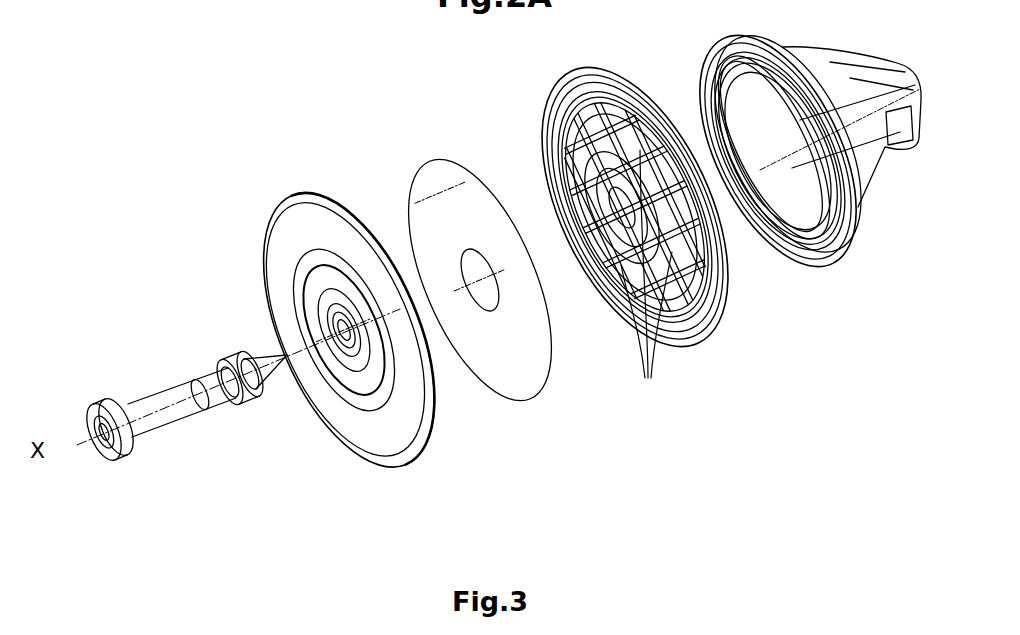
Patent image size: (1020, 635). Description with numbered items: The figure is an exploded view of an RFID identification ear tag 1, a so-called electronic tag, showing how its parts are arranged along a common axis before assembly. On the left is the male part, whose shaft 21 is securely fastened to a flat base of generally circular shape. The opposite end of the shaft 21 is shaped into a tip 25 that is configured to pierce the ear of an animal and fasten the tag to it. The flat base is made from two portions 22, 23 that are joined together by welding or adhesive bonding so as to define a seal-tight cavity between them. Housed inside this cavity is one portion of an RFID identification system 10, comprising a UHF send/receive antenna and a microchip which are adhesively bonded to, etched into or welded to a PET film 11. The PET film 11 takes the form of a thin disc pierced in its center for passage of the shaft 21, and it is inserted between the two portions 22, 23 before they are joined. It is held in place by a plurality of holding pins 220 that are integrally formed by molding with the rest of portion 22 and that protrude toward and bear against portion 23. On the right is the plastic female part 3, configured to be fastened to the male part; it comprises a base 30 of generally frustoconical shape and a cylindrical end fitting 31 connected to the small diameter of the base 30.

The RFID identification ear tag 1 is at (148, 99).
The female part 3 is at (892, 224).
The RFID identification system 10 is at (528, 427).
The PET film 11 is at (428, 173).
The shaft 21 is at (165, 392).
The portion 22 is at (550, 107).
The portion 23 is at (283, 220).
The tip 25 is at (248, 352).
The base 30 is at (805, 58).
The cylindrical end fitting 31 is at (882, 60).
The holding pins 220 is at (647, 281).